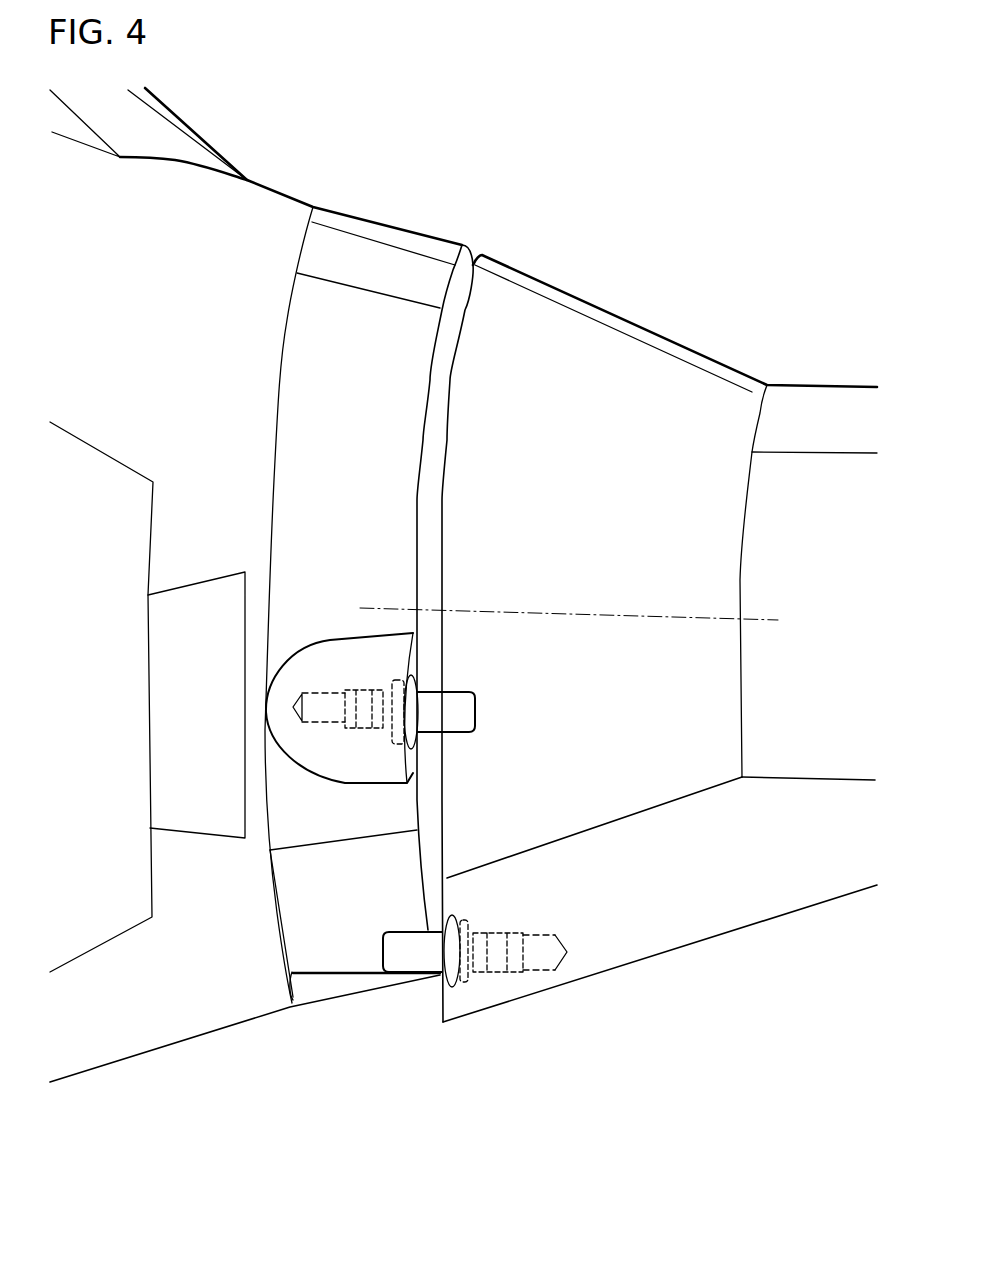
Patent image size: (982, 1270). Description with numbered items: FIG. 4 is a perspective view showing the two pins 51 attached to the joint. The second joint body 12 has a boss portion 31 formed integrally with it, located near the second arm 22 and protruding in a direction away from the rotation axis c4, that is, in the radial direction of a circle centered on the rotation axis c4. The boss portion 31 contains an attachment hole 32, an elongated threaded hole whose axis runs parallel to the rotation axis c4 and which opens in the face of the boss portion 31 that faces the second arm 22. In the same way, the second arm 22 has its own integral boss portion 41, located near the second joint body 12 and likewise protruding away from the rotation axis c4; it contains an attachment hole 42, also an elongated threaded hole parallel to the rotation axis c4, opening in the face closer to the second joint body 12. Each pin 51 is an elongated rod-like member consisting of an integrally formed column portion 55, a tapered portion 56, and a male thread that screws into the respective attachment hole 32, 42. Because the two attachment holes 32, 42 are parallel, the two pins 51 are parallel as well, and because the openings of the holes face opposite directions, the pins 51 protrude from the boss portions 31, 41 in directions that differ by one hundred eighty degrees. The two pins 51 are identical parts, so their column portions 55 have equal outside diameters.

The second joint body 12 is at (240, 233).
The second arm 22 is at (787, 407).
The boss portion 31 is at (362, 665).
The attachment hole 32 is at (338, 697).
The boss portion 41 is at (513, 990).
The attachment hole 42 is at (573, 975).
The pin 51 is at (508, 708).
The column portion 55 is at (450, 707).
The tapered portion 56 is at (388, 687).
The rotation axis c4 is at (650, 613).